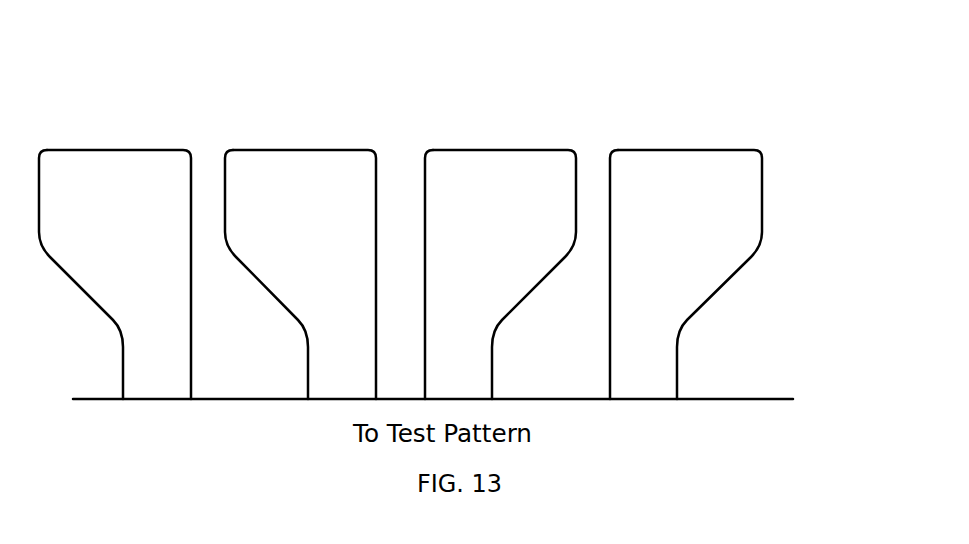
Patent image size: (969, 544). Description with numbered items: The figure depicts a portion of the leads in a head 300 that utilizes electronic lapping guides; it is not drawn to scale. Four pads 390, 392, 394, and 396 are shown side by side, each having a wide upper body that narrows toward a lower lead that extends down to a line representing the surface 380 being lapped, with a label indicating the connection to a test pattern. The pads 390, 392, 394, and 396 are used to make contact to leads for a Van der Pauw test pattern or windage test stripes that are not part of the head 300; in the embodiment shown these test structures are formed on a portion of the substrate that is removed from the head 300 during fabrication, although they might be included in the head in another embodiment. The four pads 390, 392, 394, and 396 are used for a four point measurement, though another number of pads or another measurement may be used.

The head 300 is at (480, 60).
The surface being lapped 380 is at (828, 393).
The pad 390 is at (168, 150).
The pad 392 is at (353, 150).
The pad 394 is at (448, 150).
The pad 396 is at (633, 150).